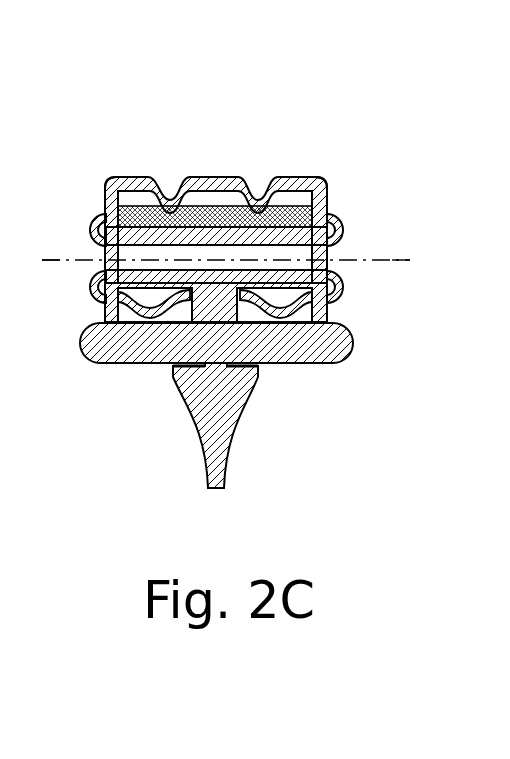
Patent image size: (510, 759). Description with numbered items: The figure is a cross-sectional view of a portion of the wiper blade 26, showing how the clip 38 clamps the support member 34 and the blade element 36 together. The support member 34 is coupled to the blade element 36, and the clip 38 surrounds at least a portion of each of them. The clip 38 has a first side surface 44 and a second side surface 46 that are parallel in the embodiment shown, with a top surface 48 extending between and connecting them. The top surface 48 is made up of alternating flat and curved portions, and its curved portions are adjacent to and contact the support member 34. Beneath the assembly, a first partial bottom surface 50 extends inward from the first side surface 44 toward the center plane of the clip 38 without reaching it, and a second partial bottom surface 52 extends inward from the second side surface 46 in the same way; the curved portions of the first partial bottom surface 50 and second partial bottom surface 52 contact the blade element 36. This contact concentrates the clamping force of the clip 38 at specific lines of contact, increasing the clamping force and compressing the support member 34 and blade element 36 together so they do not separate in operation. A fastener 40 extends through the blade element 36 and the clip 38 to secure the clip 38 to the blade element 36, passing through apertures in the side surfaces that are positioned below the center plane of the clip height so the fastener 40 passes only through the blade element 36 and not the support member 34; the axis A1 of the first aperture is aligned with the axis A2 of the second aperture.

The wiper blade 26 is at (123, 137).
The support member 34 is at (138, 206).
The blade element 36 is at (268, 381).
The clip 38 is at (311, 168).
The fastener 40 is at (348, 246).
The first side surface 44 is at (96, 205).
The second side surface 46 is at (328, 193).
The top surface 48 is at (222, 176).
The first partial bottom surface 50 is at (136, 311).
The second partial bottom surface 52 is at (308, 321).
The axis of first aperture A1 is at (82, 261).
The axis of second aperture A2 is at (358, 262).